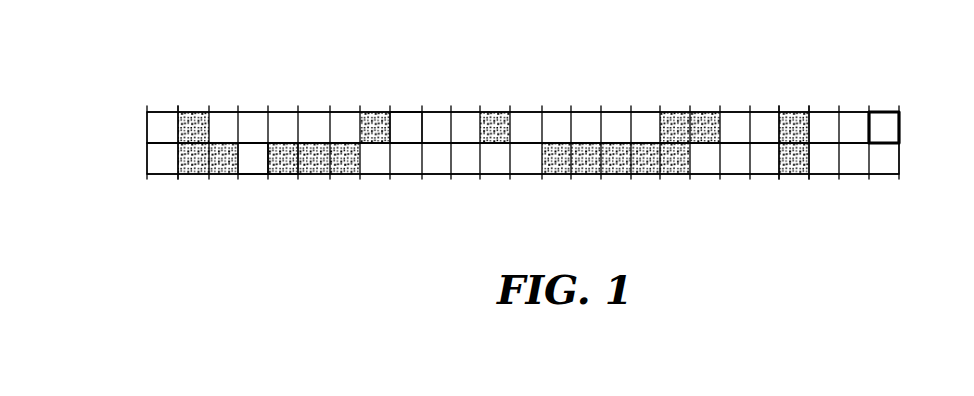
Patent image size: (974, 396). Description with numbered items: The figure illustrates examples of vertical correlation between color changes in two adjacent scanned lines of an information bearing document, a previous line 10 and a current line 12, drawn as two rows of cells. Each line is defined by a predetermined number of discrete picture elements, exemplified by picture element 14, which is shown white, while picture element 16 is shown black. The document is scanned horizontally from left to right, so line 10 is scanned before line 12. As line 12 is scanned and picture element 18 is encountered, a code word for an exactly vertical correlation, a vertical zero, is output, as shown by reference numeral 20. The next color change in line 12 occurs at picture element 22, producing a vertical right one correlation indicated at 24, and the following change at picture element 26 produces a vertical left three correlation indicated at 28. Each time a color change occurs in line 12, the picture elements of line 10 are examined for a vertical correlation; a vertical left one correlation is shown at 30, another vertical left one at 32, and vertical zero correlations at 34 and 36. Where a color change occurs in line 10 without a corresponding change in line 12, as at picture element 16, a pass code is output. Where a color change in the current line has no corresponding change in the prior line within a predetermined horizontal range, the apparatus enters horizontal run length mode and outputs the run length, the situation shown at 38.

The line 10 is at (143, 130).
The line 12 is at (143, 163).
The picture element 14 is at (893, 112).
The picture element 16 is at (510, 112).
The picture element 18 is at (197, 177).
The vertical 0 correlation 20 is at (180, 177).
The picture element 22 is at (252, 177).
The vertical right 1 correlation 24 is at (208, 113).
The picture element 26 is at (292, 176).
The vertical left 3 correlation 28 is at (267, 147).
The vertical left 1 correlation 30 is at (407, 127).
The vertical left 1 correlation 32 is at (692, 173).
The vertical 0 correlation 34 is at (779, 176).
The vertical 0 correlation 36 is at (809, 176).
The horizontal run length mode situation 38 is at (690, 207).